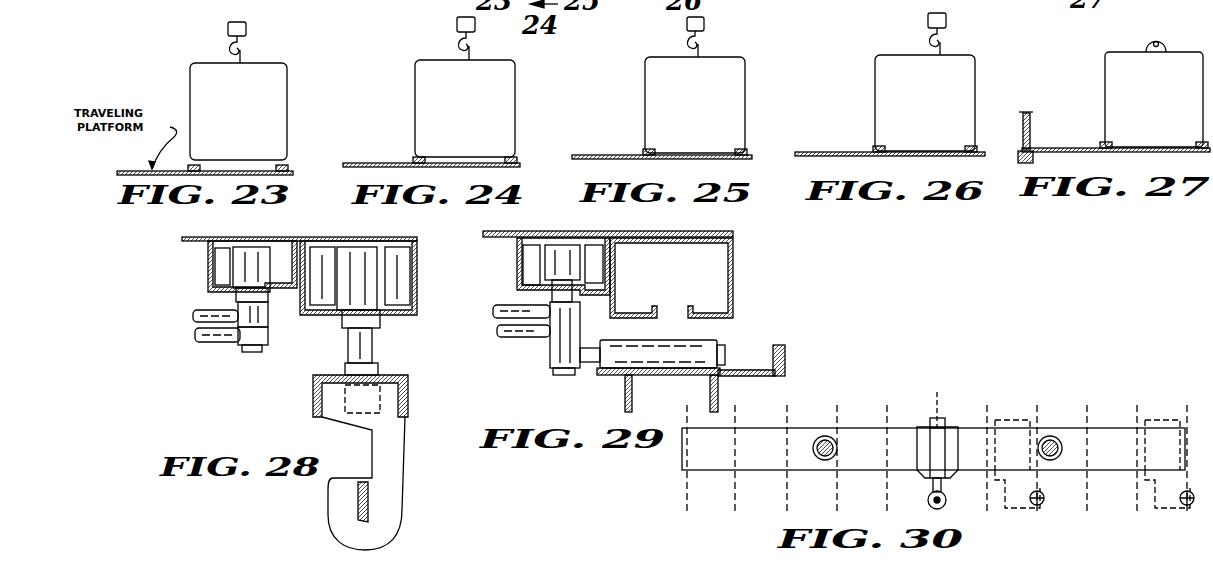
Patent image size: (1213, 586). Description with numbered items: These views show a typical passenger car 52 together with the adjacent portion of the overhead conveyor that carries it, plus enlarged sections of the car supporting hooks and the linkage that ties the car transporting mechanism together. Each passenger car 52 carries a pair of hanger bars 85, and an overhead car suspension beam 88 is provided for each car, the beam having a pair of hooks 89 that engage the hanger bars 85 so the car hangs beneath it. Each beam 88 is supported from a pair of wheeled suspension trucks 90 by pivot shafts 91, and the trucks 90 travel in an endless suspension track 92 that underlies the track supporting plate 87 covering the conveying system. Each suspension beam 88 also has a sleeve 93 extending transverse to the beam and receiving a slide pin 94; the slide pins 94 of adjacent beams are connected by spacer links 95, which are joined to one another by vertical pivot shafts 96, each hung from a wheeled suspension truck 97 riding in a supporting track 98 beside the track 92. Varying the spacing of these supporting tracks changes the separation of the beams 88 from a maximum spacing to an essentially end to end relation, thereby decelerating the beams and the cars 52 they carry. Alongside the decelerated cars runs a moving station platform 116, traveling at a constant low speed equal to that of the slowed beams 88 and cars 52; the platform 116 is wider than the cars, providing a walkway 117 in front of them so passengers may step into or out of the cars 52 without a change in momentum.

In FIG. 23, the passenger car 52 is at (238, 91).
In FIG. 24, the passenger car 52 is at (465, 87).
In FIG. 25, the passenger car 52 is at (695, 85).
In FIG. 26, the passenger car 52 is at (925, 103).
In FIG. 27, the passenger car 52 is at (1154, 95).
In FIG. 26, the hanger bar 85 is at (924, 42).
In FIG. 28, the hanger bar 85 is at (365, 500).
In FIG. 28, the track supporting plate 87 is at (304, 237).
In FIG. 29, the track supporting plate 87 is at (640, 232).
In FIG. 26, the overhead car suspension beam 88 is at (941, 14).
In FIG. 28, the overhead car suspension beam 88 is at (388, 375).
In FIG. 29, the overhead car suspension beam 88 is at (634, 396).
In FIG. 30, the overhead car suspension beam 88 is at (1090, 426).
In FIG. 26, the hook 89 is at (944, 39).
In FIG. 28, the hook 89 is at (397, 460).
In FIG. 28, the wheeled suspension truck 90 is at (345, 260).
In FIG. 28, the pivot shaft 91 is at (351, 341).
In FIG. 30, the pivot shaft 91 is at (830, 436).
In FIG. 28, the endless suspension track 92 is at (420, 266).
In FIG. 29, the endless suspension track 92 is at (713, 274).
In FIG. 29, the sleeve 93 is at (672, 367).
In FIG. 30, the sleeve 93 is at (918, 412).
In FIG. 29, the slide pin 94 is at (597, 369).
In FIG. 30, the slide pin 94 is at (942, 420).
In FIG. 28, the spacer link 95 is at (194, 330).
In FIG. 29, the spacer link 95 is at (487, 331).
In FIG. 28, the vertical pivot shaft 96 is at (251, 352).
In FIG. 29, the vertical pivot shaft 96 is at (576, 244).
In FIG. 30, the vertical pivot shaft 96 is at (928, 500).
In FIG. 28, the wheeled suspension truck 97 is at (221, 273).
In FIG. 29, the wheeled suspension truck 97 is at (536, 238).
In FIG. 28, the supporting track 98 is at (210, 257).
In FIG. 29, the supporting track 98 is at (528, 262).
In FIG. 23, the moving station platform 116 is at (260, 166).
In FIG. 24, the moving station platform 116 is at (491, 160).
In FIG. 27, the moving station platform 116 is at (1133, 146).
In FIG. 23, the walkway 117 is at (132, 172).
In FIG. 24, the walkway 117 is at (396, 160).
In FIG. 27, the walkway 117 is at (1081, 143).